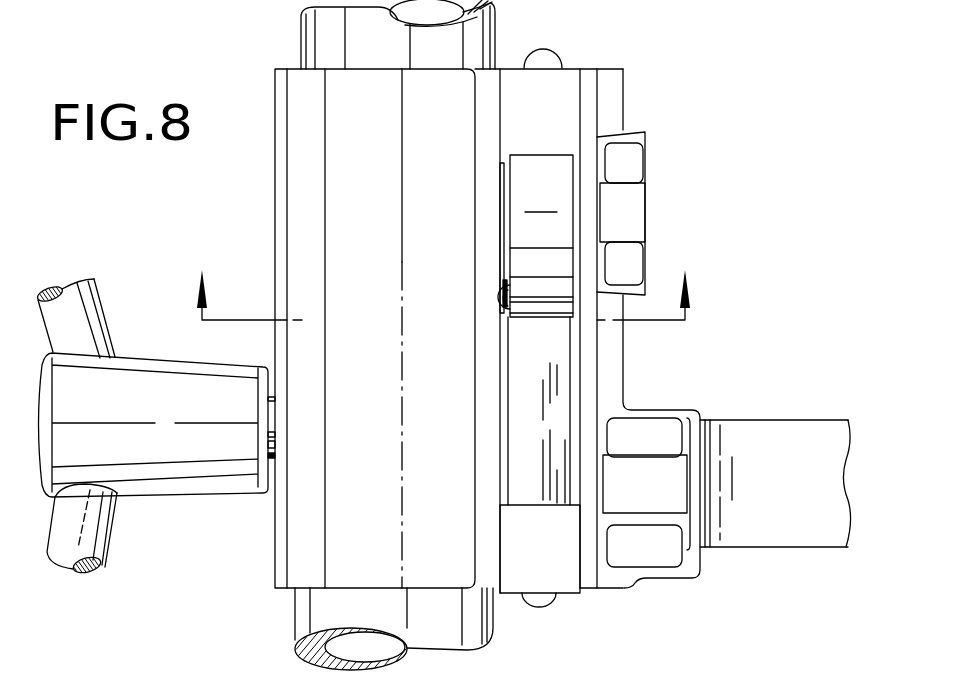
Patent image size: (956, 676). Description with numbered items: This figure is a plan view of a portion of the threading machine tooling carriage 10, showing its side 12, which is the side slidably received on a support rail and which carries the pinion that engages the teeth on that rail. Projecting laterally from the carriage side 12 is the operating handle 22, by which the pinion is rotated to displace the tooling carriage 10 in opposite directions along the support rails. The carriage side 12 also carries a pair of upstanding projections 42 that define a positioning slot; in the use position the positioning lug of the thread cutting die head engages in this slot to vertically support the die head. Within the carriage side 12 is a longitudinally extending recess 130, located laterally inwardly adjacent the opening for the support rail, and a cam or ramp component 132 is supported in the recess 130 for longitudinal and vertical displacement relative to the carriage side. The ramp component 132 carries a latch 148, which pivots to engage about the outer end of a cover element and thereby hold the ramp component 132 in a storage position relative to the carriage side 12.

The carriage side 12 is at (262, 543).
The operating handle 22 is at (87, 528).
The upstanding projections 42 is at (625, 170).
The recess 130 is at (564, 380).
The ramp component 132 is at (538, 305).
The latch 148 is at (500, 173).
The tooling carriage 10 is at (443, 273).